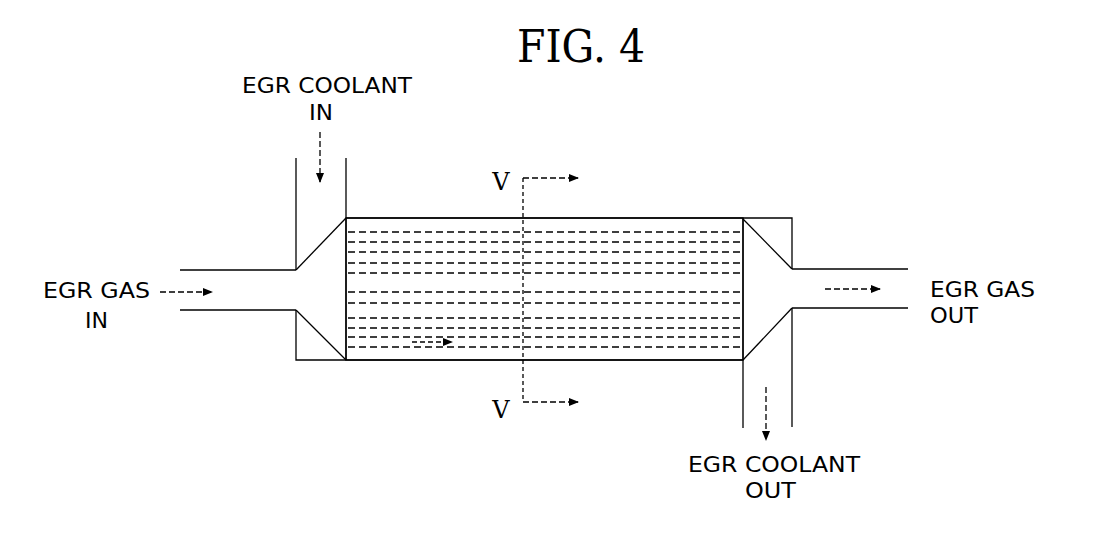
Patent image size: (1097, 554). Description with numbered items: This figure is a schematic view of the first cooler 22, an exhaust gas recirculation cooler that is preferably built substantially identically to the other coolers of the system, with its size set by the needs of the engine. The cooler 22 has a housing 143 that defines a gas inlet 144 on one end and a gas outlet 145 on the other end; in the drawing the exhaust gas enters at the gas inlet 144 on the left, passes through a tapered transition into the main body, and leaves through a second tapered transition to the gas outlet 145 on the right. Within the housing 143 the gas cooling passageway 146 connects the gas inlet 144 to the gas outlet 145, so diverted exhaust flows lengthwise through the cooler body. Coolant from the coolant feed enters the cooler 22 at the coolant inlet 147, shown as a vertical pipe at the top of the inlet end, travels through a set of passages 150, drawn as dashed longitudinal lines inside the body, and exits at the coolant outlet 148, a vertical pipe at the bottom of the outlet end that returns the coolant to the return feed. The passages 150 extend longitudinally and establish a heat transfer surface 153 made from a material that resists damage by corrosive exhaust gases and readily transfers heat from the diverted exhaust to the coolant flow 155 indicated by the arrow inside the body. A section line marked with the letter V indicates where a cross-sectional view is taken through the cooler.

The first cooler 22 is at (658, 216).
The housing 143 is at (380, 218).
The gas inlet 144 is at (233, 310).
The gas outlet 145 is at (848, 269).
The gas cooling passageway 146 is at (590, 352).
The coolant inlet 147 is at (296, 183).
The coolant outlet 148 is at (792, 398).
The passages 150 is at (370, 347).
The heat transfer surface 153 is at (488, 345).
The coolant flow 155 is at (415, 340).